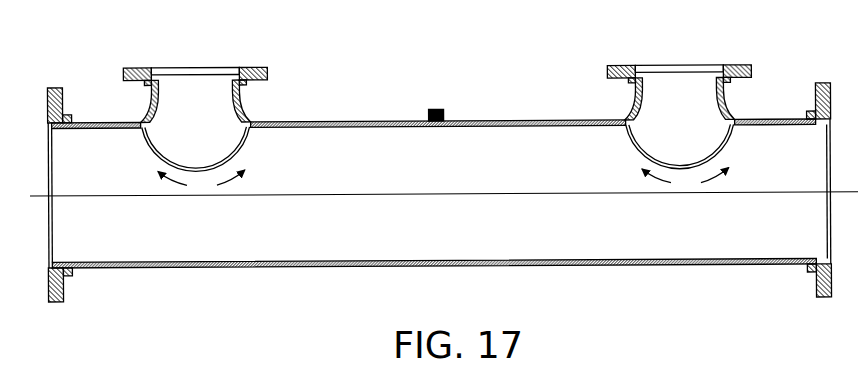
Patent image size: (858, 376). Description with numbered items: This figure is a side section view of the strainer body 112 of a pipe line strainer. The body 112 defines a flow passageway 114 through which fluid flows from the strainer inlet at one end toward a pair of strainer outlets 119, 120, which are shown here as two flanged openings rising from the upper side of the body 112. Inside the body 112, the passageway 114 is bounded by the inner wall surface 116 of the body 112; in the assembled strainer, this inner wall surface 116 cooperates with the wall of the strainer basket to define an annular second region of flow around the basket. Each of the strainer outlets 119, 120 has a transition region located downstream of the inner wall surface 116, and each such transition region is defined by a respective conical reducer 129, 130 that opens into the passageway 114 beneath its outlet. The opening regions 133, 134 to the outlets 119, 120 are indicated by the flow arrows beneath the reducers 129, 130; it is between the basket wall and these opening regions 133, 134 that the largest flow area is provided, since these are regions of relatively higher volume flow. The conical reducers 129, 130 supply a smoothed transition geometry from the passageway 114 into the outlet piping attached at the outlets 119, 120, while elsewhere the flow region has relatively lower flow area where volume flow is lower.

The body 112 is at (628, 295).
The flow passageway 114 is at (418, 168).
The inner wall surface 116 is at (554, 128).
The strainer outlet 119 is at (203, 72).
The strainer outlet 120 is at (687, 73).
The conical reducer 129 is at (161, 132).
The conical reducer 130 is at (643, 126).
The opening region 133 is at (204, 181).
The opening region 134 is at (687, 179).